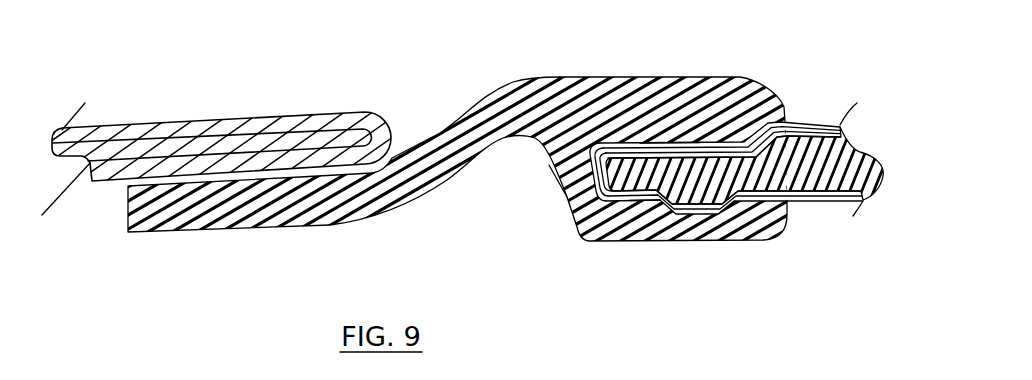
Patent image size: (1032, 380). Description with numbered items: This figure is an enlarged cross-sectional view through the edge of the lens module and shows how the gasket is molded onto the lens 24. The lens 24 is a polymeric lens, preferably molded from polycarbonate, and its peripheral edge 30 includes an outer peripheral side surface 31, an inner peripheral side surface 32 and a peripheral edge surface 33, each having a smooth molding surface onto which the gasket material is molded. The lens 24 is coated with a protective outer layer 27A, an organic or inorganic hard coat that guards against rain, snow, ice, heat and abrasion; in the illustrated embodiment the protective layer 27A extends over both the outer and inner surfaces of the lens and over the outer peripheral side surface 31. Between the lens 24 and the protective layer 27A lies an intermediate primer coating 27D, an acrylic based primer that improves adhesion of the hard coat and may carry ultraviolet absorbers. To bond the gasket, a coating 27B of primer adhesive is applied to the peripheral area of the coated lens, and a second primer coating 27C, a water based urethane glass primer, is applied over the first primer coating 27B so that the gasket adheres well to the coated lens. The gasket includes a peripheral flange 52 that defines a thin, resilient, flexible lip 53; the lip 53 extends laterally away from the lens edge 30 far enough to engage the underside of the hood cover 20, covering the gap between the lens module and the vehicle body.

The hood cover 20 is at (238, 117).
The lip 53 is at (248, 228).
The peripheral flange 52 is at (467, 84).
The peripheral edge 30 is at (572, 251).
The peripheral edge surface 33 is at (553, 192).
The outer peripheral side surface 31 is at (663, 140).
The inner peripheral side surface 32 is at (650, 202).
The protective outer layer 27A is at (823, 109).
The primer adhesive coating 27B is at (790, 207).
The second primer coating 27C is at (757, 122).
The intermediate primer coating 27D is at (840, 216).
The lens 24 is at (866, 141).